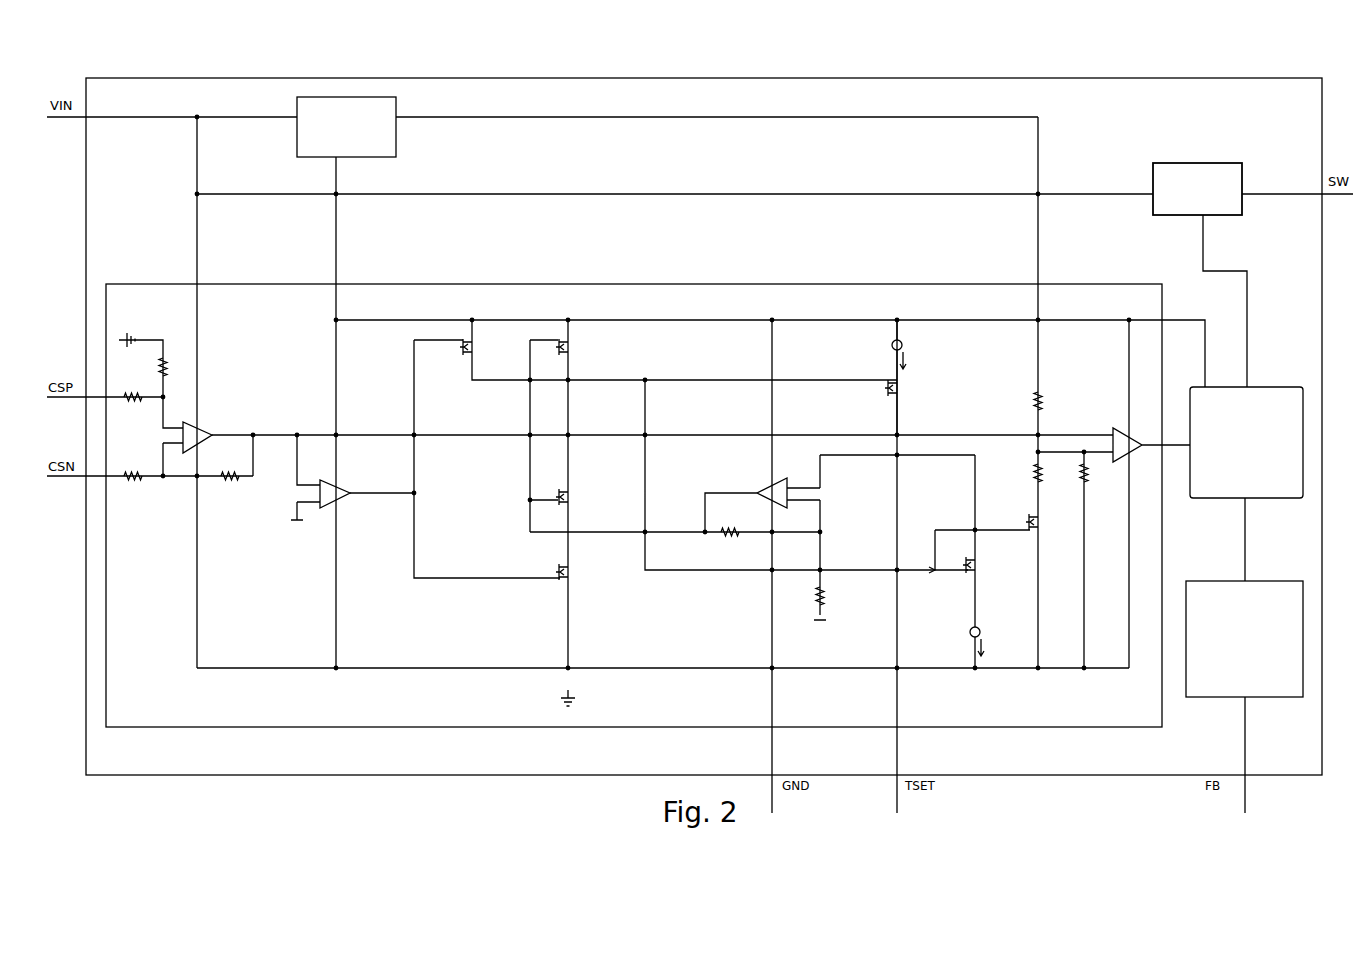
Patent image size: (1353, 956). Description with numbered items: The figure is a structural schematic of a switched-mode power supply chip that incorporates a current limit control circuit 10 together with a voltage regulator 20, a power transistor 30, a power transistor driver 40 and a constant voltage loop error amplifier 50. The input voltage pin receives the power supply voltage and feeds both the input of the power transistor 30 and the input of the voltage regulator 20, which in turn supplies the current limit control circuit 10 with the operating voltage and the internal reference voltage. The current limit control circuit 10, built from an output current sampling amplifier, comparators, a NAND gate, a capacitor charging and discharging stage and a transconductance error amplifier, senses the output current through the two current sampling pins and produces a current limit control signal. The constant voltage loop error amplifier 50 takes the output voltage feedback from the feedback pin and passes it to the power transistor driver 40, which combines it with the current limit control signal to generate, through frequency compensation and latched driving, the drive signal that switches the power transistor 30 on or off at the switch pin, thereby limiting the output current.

The current limit control circuit 10 is at (430, 284).
The voltage regulator 20 is at (362, 97).
The power transistor 30 is at (1203, 163).
The power transistor driver 40 is at (1290, 387).
The constant voltage loop error amplifier 50 is at (1290, 581).